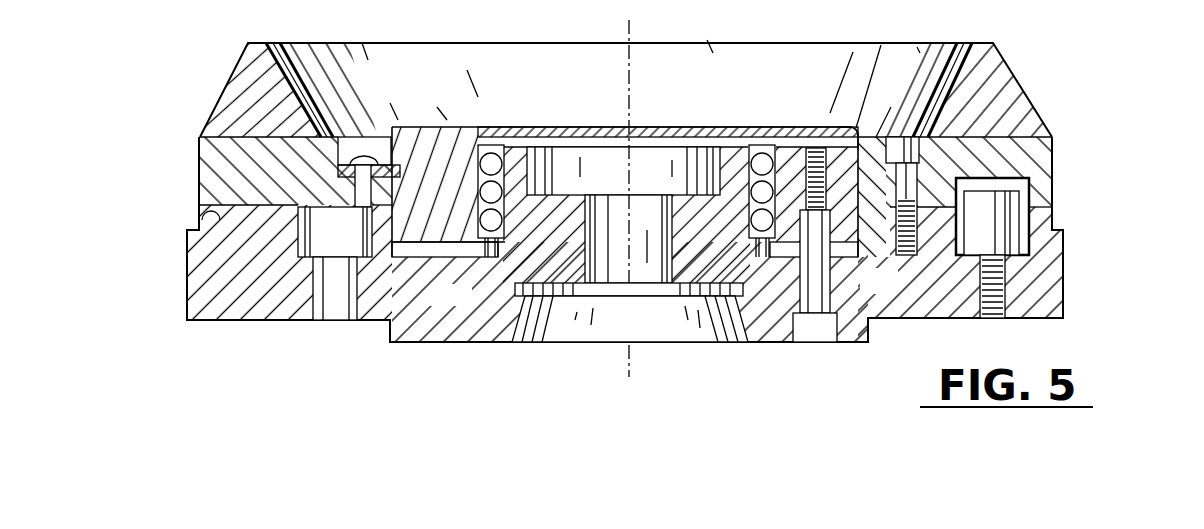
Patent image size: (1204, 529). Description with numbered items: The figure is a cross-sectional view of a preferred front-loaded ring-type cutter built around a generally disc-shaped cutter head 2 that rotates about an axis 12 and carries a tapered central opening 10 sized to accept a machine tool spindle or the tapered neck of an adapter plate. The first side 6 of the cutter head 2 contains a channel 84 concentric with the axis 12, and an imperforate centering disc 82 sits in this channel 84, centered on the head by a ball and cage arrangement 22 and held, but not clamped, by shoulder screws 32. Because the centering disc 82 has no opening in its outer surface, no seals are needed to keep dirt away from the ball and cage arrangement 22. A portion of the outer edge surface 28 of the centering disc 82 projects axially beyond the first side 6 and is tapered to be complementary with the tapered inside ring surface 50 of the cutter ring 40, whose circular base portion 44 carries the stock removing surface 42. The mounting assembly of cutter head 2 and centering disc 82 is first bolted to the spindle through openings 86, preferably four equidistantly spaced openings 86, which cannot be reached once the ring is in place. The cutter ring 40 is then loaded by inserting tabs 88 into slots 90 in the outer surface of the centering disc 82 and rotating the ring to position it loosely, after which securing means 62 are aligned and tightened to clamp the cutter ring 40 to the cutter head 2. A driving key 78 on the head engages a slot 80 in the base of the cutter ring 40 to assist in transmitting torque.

The cutter head 2 is at (625, 260).
The first side 6 is at (177, 203).
The central opening 10 is at (630, 341).
The axis 12 is at (623, 198).
The ball and cage arrangement 22 is at (626, 163).
The outer edge surface 28 is at (795, 80).
The shoulder screws 32 is at (816, 267).
The cutter ring 40 is at (1068, 131).
The stock removing surface 42 is at (653, 90).
The circular base portion 44 is at (670, 172).
The tapered inside ring surface 50 is at (878, 217).
The securing means 62 is at (900, 155).
The driving key 78 is at (1043, 254).
The slot 80 is at (1059, 216).
The centering disc 82 is at (668, 95).
The channel 84 is at (625, 218).
The openings 86 is at (335, 303).
The tabs 88 is at (619, 90).
The slots 90 is at (394, 136).